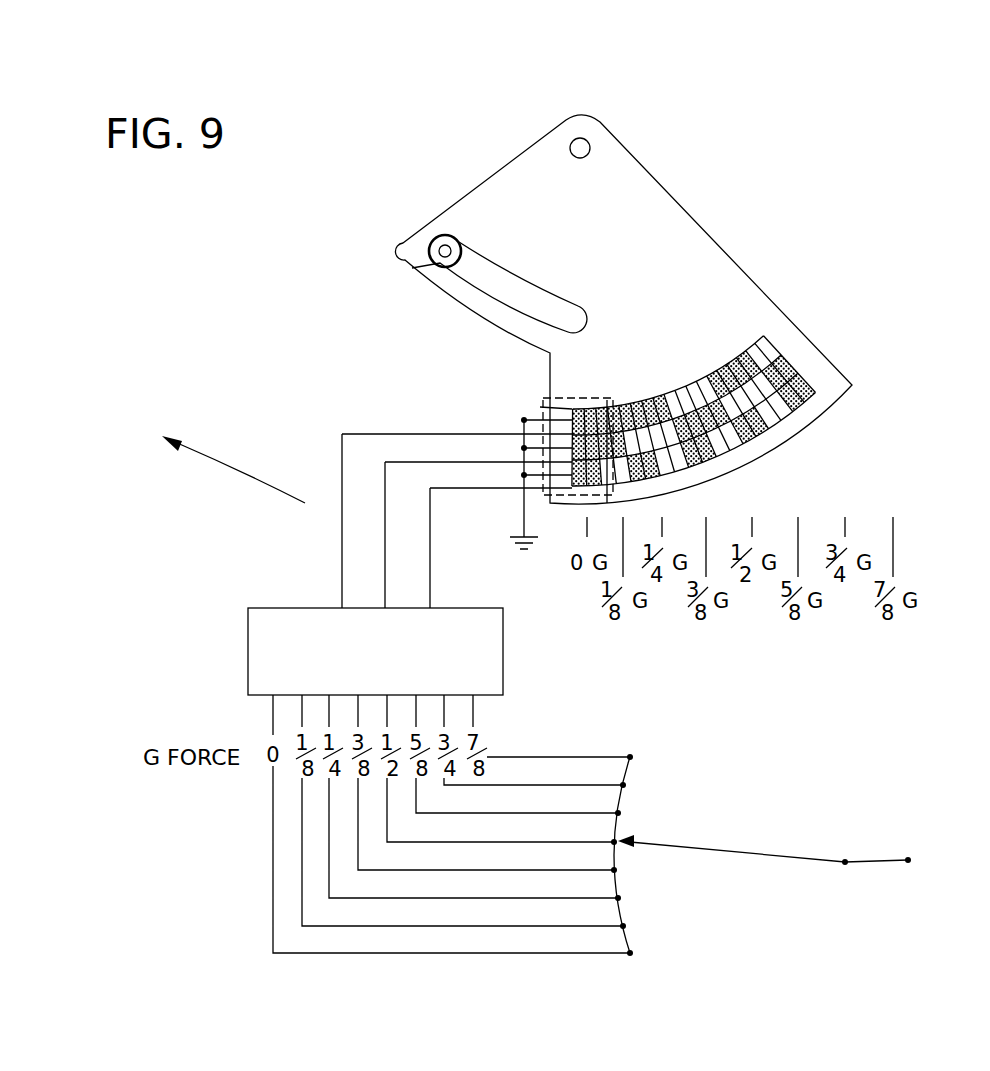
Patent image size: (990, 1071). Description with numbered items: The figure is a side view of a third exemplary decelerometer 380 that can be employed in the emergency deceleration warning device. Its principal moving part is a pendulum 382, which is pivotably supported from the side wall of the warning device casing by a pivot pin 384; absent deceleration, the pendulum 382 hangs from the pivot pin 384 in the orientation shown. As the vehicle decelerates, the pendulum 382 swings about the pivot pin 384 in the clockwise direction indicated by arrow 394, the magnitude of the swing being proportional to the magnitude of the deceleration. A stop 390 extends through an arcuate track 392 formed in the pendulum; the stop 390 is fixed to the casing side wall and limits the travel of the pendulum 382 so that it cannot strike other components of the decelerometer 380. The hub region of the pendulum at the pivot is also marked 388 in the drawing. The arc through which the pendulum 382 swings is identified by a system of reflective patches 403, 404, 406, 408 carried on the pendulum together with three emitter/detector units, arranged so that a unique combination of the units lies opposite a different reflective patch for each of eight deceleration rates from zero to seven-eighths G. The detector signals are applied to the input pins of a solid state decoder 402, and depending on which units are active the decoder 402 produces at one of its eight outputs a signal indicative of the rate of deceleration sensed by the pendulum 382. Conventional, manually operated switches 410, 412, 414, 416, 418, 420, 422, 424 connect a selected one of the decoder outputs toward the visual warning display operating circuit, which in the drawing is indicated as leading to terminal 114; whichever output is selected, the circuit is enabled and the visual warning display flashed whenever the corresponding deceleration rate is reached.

The decelerometer 380 is at (452, 166).
The pendulum 382 is at (745, 253).
The pivot pin 384 is at (591, 150).
The pivot pin 388 is at (400, 247).
The stop 390 is at (431, 263).
The arcuate track 392 is at (498, 278).
The arrow 394 is at (200, 457).
The solid state decoder 402 is at (297, 608).
The reflective patch 403 is at (545, 411).
The reflective patch 404 is at (672, 479).
The reflective patch 406 is at (740, 452).
The reflective patch 408 is at (808, 410).
The manually operated switch 410 is at (610, 745).
The manually operated switch 412 is at (599, 775).
The manually operated switch 414 is at (596, 803).
The manually operated switch 416 is at (593, 831).
The manually operated switch 418 is at (591, 860).
The manually operated switch 420 is at (592, 888).
The manually operated switch 422 is at (596, 916).
The manually operated switch 424 is at (603, 943).
The terminal 114 is at (784, 845).